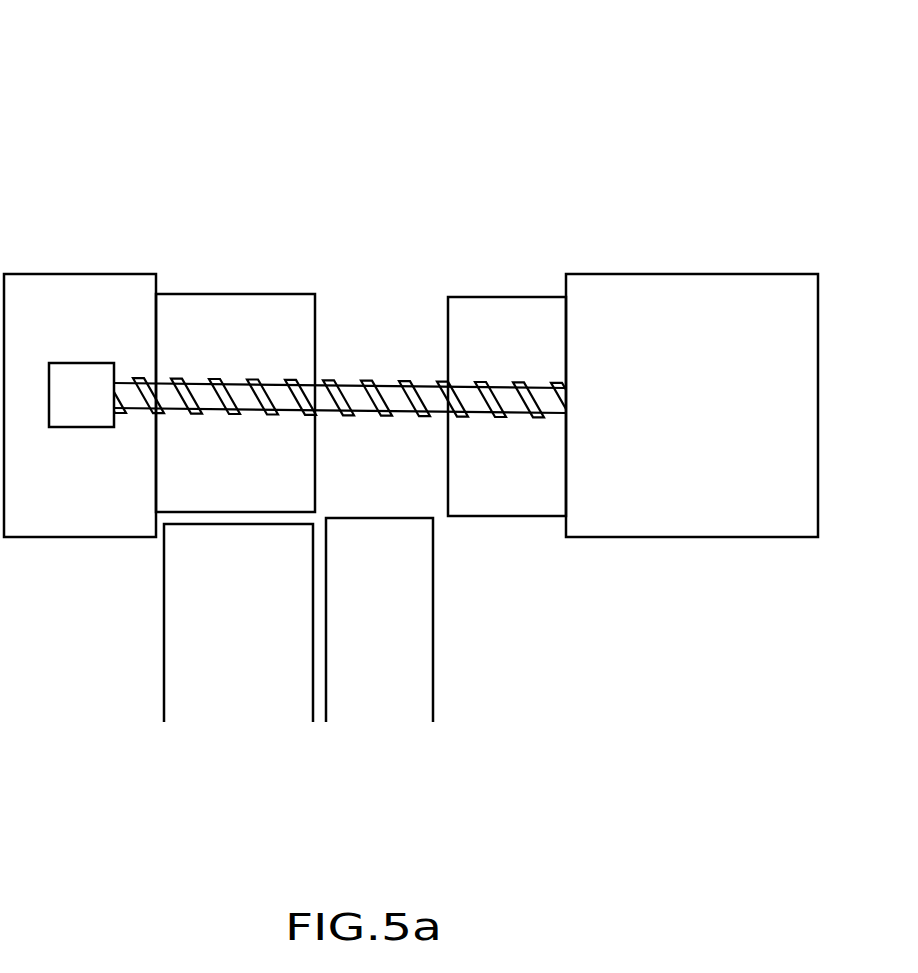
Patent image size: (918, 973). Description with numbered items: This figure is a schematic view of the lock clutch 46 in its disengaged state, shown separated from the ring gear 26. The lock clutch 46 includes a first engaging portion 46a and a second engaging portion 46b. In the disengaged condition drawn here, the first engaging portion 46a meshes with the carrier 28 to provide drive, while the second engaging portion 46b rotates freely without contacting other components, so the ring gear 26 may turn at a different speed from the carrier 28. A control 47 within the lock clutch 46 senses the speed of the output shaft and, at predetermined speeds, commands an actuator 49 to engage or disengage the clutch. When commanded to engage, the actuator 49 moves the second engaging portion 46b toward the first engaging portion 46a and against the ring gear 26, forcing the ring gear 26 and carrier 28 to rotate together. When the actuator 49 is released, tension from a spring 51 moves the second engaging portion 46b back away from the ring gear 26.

The lock clutch 46 is at (223, 110).
The first engaging portion 46a is at (188, 294).
The second engaging portion 46b is at (495, 297).
The control 47 is at (77, 378).
The actuator 49 is at (321, 393).
The spring 51 is at (400, 408).
The carrier 28 is at (262, 666).
The ring gear 26 is at (398, 664).